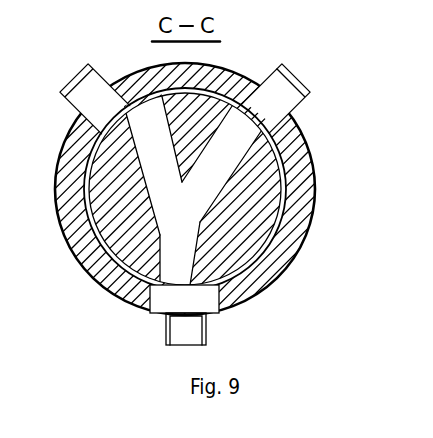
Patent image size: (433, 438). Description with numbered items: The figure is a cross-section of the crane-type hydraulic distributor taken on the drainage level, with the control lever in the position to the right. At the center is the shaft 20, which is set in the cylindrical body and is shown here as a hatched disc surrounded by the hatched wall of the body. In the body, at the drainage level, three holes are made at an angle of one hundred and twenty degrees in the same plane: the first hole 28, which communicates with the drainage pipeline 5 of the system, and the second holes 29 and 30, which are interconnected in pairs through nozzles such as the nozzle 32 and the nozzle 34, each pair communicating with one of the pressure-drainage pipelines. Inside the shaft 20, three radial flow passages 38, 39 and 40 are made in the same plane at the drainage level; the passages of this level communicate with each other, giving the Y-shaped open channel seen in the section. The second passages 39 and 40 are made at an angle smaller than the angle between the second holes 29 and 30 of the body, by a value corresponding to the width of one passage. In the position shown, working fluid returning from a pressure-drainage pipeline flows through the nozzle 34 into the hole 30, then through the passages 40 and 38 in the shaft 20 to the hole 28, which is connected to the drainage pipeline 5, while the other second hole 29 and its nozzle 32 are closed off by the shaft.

The drainage pipeline 5 is at (172, 320).
The shaft 20 is at (110, 238).
The first hole of the drainage level 28 is at (203, 302).
The second hole of the drainage level 29 is at (70, 153).
The second hole of the drainage level 30 is at (292, 148).
The nozzle 32 is at (77, 98).
The nozzle 34 is at (333, 76).
The first radial flow passage of the drainage level 38 is at (172, 253).
The second radial flow passage of the drainage level 39 is at (148, 130).
The second radial flow passage of the drainage level 40 is at (240, 147).